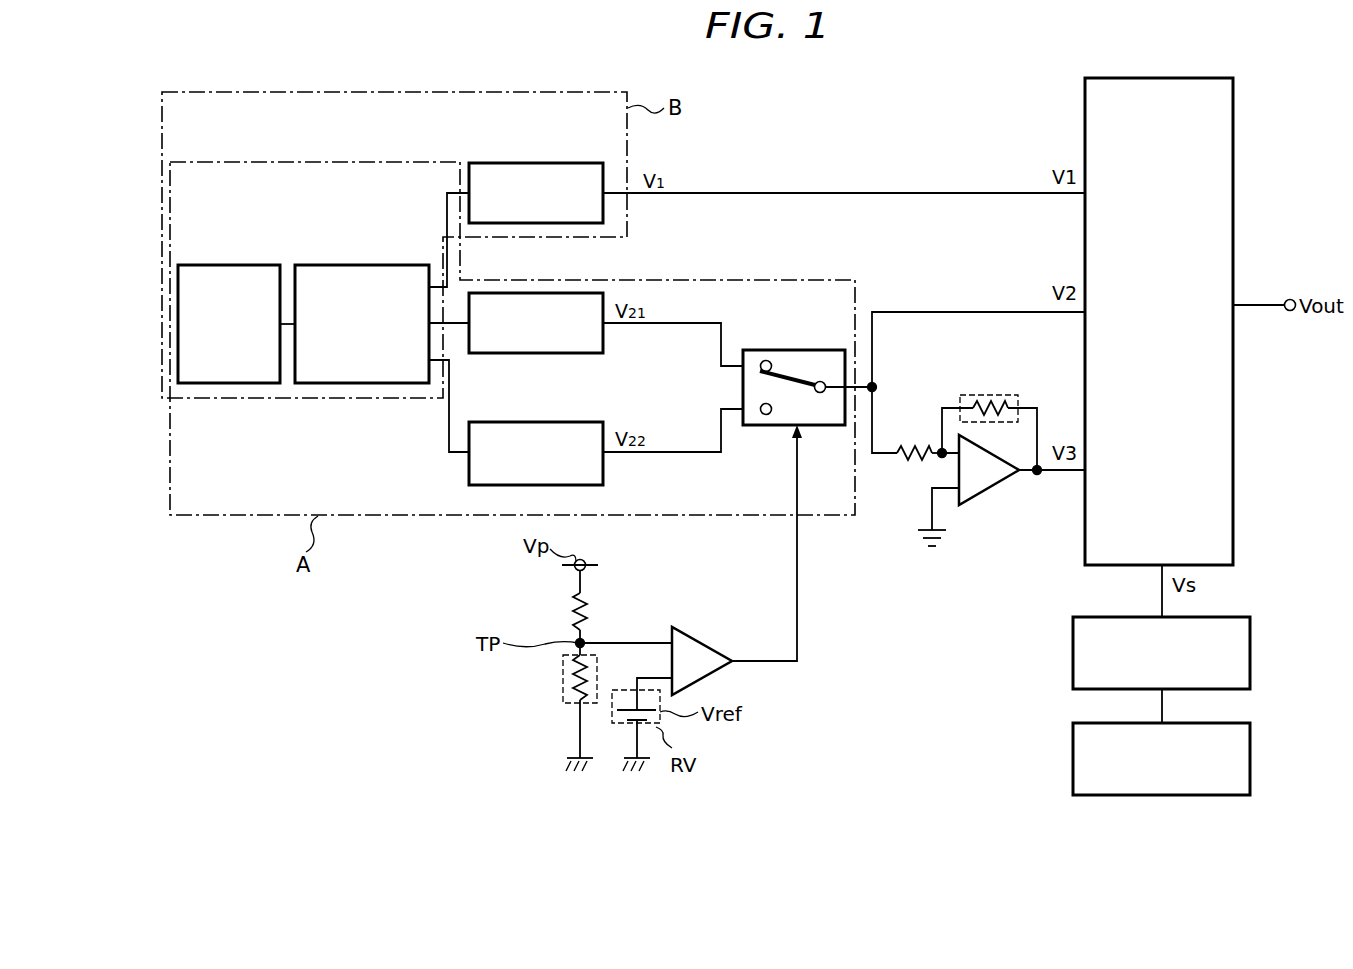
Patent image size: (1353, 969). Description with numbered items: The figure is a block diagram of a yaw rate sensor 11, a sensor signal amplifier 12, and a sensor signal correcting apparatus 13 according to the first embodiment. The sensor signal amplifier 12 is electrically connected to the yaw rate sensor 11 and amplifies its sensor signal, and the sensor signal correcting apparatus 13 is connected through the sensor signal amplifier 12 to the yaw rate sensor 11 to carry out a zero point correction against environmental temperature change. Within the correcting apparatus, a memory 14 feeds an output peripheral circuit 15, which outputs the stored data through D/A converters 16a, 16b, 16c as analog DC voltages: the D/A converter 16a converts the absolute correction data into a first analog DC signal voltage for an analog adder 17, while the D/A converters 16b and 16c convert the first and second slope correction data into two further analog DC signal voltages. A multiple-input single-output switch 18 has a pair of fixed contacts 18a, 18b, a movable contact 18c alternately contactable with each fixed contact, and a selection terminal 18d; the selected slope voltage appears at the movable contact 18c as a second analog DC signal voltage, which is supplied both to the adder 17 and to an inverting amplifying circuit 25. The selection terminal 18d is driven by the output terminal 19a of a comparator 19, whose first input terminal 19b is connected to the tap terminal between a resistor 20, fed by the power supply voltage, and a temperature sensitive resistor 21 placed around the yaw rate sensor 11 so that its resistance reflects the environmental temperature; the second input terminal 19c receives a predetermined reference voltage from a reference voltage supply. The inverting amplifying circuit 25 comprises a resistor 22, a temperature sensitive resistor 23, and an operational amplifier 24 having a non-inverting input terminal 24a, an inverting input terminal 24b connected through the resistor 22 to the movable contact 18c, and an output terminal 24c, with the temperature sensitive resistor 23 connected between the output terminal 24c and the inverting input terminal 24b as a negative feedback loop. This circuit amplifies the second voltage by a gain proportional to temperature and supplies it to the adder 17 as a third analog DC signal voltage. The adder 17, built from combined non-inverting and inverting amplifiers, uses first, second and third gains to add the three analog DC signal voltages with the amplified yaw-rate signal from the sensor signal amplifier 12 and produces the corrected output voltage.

The yaw rate sensor 11 is at (1251, 737).
The sensor signal amplifier 12 is at (1251, 630).
The sensor signal correcting apparatus 13 is at (712, 148).
The memory 14 is at (230, 265).
The output peripheral circuit 15 is at (333, 265).
The D/A converter 16a is at (596, 151).
The D/A converter 16b is at (513, 353).
The D/A converter 16c is at (585, 422).
The analog adder 17 is at (1204, 78).
The switch 18 is at (766, 485).
The fixed contact 18a is at (770, 360).
The fixed contact 18b is at (760, 406).
The movable contact 18c is at (824, 393).
The selection terminal 18d is at (790, 430).
The comparator 19 is at (713, 641).
The output terminal 19a is at (772, 663).
The first input terminal 19b is at (668, 641).
The second input terminal 19c is at (662, 679).
The resistor 20 is at (568, 610).
The temperature sensitive resistor 21 is at (563, 681).
The resistor 22 is at (912, 446).
The temperature sensitive resistor 23 is at (1010, 395).
The operational amplifier 24 is at (982, 510).
The non-inverting input terminal 24a is at (948, 492).
The inverting input terminal 24b is at (954, 457).
The output terminal 24c is at (1028, 472).
The inverting amplifying circuit 25 is at (980, 555).